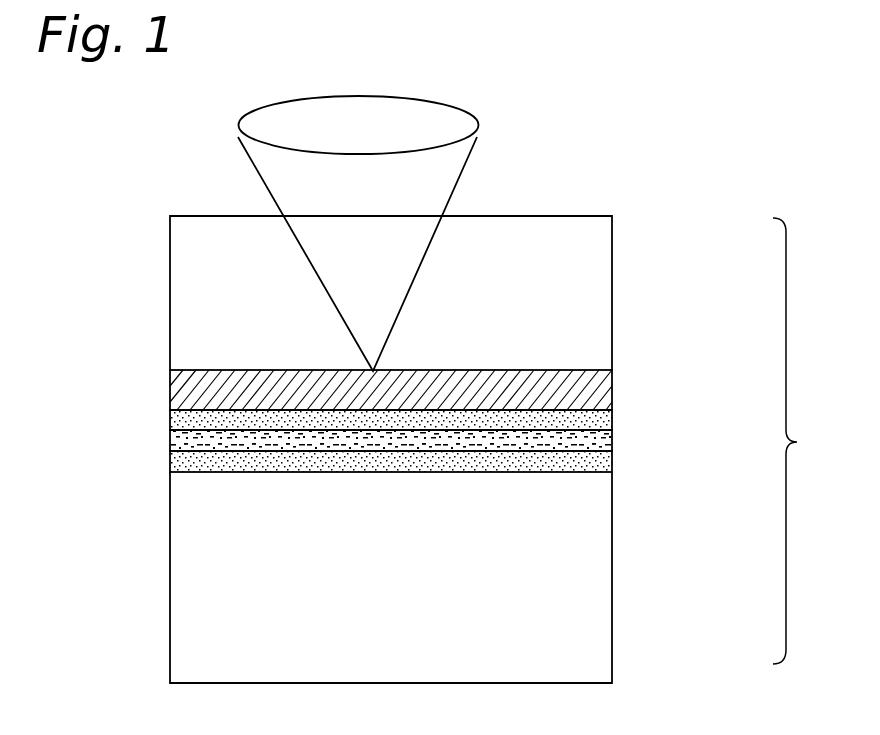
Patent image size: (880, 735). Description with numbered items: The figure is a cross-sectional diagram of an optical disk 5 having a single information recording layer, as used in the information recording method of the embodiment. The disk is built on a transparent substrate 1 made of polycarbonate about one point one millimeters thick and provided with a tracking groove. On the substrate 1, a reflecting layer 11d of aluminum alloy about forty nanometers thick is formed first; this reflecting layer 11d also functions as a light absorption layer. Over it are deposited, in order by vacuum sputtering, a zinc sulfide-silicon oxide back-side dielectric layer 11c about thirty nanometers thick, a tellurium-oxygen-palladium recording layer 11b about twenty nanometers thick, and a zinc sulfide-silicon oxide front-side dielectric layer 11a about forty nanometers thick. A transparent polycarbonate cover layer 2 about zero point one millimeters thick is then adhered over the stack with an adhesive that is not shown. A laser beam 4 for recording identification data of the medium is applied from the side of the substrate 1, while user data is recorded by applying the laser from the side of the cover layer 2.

The substrate 1 is at (391, 293).
The cover layer 2 is at (391, 577).
The laser beam 4 is at (433, 180).
The optical disk 5 is at (799, 441).
The front-side dielectric layer 11a is at (598, 462).
The recording layer 11b is at (603, 447).
The back-side dielectric layer 11c is at (610, 418).
The reflecting layer 11d is at (597, 382).